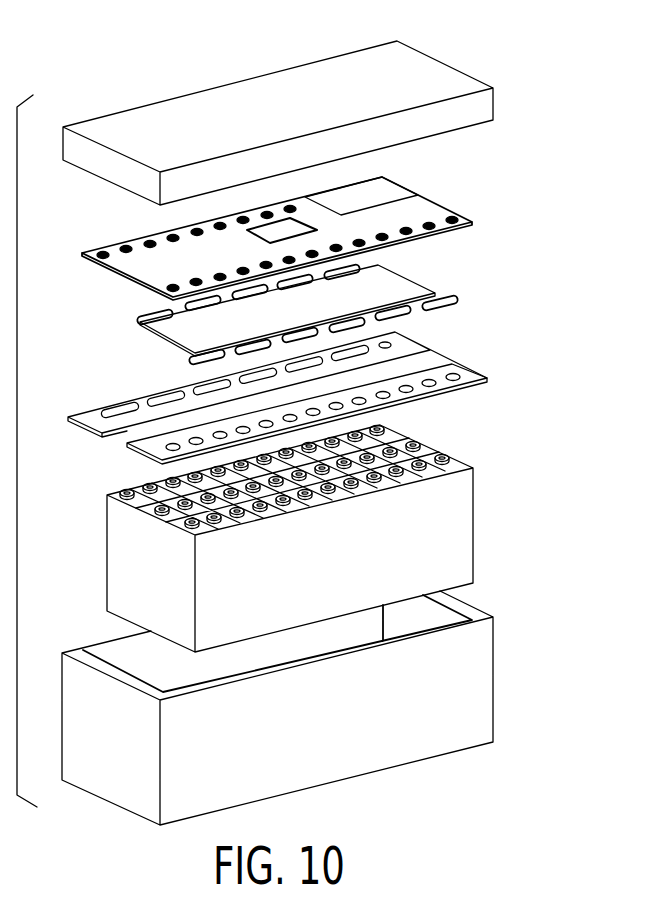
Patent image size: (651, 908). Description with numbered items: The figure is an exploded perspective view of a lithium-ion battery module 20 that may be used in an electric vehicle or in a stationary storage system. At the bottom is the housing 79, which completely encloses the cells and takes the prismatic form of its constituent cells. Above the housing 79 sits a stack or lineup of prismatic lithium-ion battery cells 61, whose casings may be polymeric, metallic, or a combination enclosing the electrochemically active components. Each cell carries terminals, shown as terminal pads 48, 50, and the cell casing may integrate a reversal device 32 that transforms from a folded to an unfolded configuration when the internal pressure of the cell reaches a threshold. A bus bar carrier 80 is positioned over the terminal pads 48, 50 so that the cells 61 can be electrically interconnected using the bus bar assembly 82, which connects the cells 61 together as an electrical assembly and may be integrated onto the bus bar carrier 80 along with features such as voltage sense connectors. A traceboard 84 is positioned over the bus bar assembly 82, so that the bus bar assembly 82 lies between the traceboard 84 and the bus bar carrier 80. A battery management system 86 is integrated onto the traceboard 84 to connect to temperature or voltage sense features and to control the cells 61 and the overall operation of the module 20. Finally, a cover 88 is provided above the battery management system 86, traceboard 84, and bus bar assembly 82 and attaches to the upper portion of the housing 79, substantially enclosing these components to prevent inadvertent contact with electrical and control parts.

The lithium-ion battery module 20 is at (508, 58).
The cover 88 is at (485, 112).
The battery management system 86 is at (388, 188).
The traceboard 84 is at (296, 228).
The bus bar assembly 82 is at (413, 280).
The bus bar carrier 80 is at (443, 355).
The lithium-ion battery cells 61 is at (315, 528).
The terminal pad 50 is at (124, 491).
The reversal device 32 is at (158, 514).
The terminal pad 48 is at (190, 535).
The housing 79 is at (493, 677).